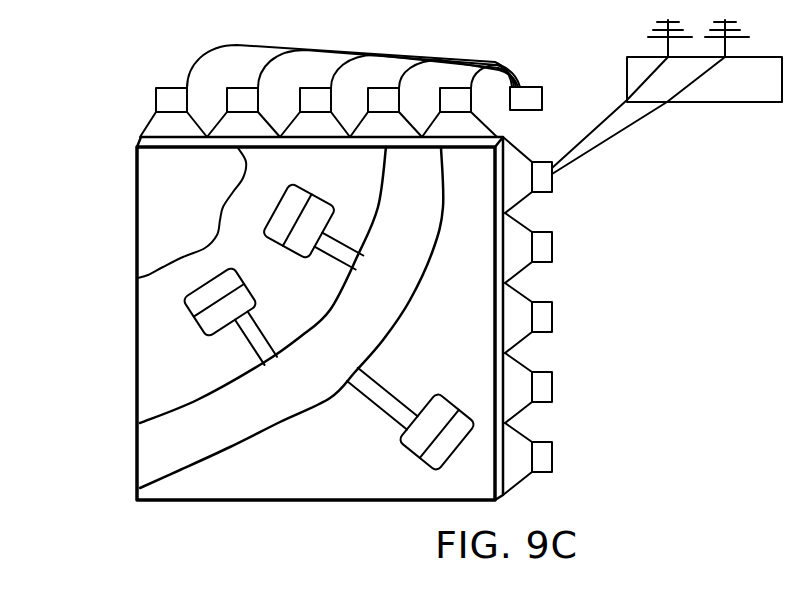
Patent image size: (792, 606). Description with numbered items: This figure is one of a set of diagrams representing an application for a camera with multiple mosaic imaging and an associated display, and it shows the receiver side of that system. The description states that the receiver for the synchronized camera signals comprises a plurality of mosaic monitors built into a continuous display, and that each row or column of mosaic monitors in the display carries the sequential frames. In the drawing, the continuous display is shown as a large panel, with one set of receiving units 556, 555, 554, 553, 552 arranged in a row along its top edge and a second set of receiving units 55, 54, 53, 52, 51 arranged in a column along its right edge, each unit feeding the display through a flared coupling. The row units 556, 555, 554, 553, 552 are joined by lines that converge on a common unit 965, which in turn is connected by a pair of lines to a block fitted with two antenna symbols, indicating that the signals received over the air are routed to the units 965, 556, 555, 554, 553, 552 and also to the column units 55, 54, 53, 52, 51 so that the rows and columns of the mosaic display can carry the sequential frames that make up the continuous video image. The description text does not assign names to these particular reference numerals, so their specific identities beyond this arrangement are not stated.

The transducer 556 is at (162, 88).
The transducer 555 is at (256, 88).
The transducer 554 is at (329, 88).
The transducer 553 is at (397, 88).
The transducer 552 is at (470, 88).
The control unit 965 is at (535, 86).
The transducer 55 is at (547, 192).
The transducer 54 is at (547, 262).
The transducer 53 is at (547, 332).
The transducer 52 is at (553, 398).
The transducer 51 is at (553, 466).